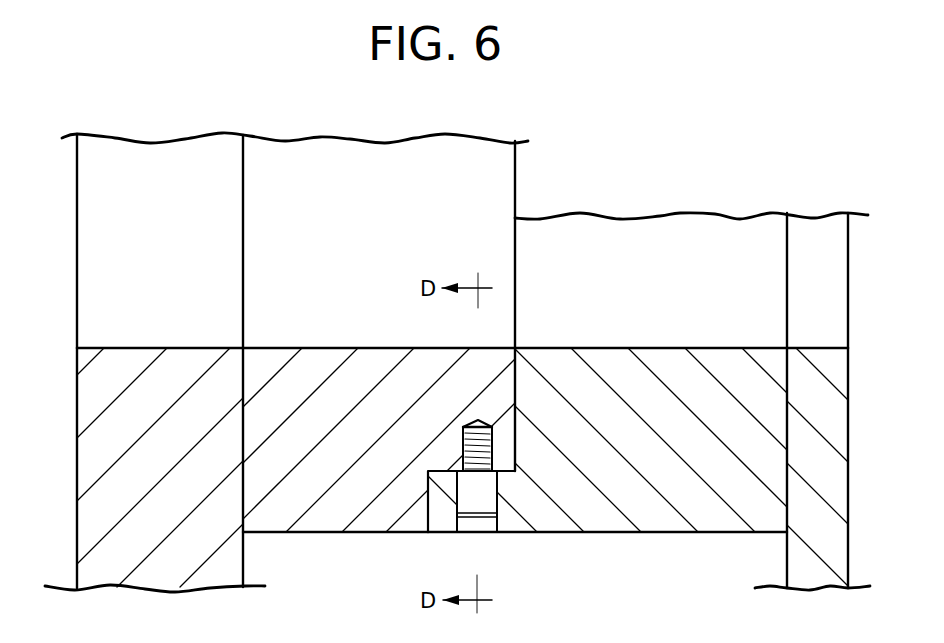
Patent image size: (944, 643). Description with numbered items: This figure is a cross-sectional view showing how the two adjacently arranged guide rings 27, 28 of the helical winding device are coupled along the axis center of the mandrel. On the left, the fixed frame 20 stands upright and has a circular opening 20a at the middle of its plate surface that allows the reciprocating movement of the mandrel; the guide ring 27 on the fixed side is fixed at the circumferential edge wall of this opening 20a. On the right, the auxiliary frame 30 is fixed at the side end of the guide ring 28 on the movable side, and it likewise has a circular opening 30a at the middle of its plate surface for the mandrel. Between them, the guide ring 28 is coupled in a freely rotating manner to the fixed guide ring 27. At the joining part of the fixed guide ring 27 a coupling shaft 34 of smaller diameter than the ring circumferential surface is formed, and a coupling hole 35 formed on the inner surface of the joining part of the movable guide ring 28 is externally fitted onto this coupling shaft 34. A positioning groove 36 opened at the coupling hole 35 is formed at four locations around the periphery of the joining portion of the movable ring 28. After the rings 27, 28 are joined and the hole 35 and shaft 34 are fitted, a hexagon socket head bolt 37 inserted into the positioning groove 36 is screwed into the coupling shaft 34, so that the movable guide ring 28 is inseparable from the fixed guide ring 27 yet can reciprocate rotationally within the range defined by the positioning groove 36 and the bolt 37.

The fixed frame 20 is at (77, 450).
The circular opening 20a is at (116, 348).
The guide ring 27 is at (322, 523).
The guide ring 28 is at (667, 522).
The auxiliary frame 30 is at (848, 495).
The circular opening 30a is at (817, 348).
The coupling shaft 34 is at (507, 474).
The coupling hole 35 is at (446, 470).
The positioning groove 36 is at (473, 523).
The hexagon socket head bolt 37 is at (486, 506).